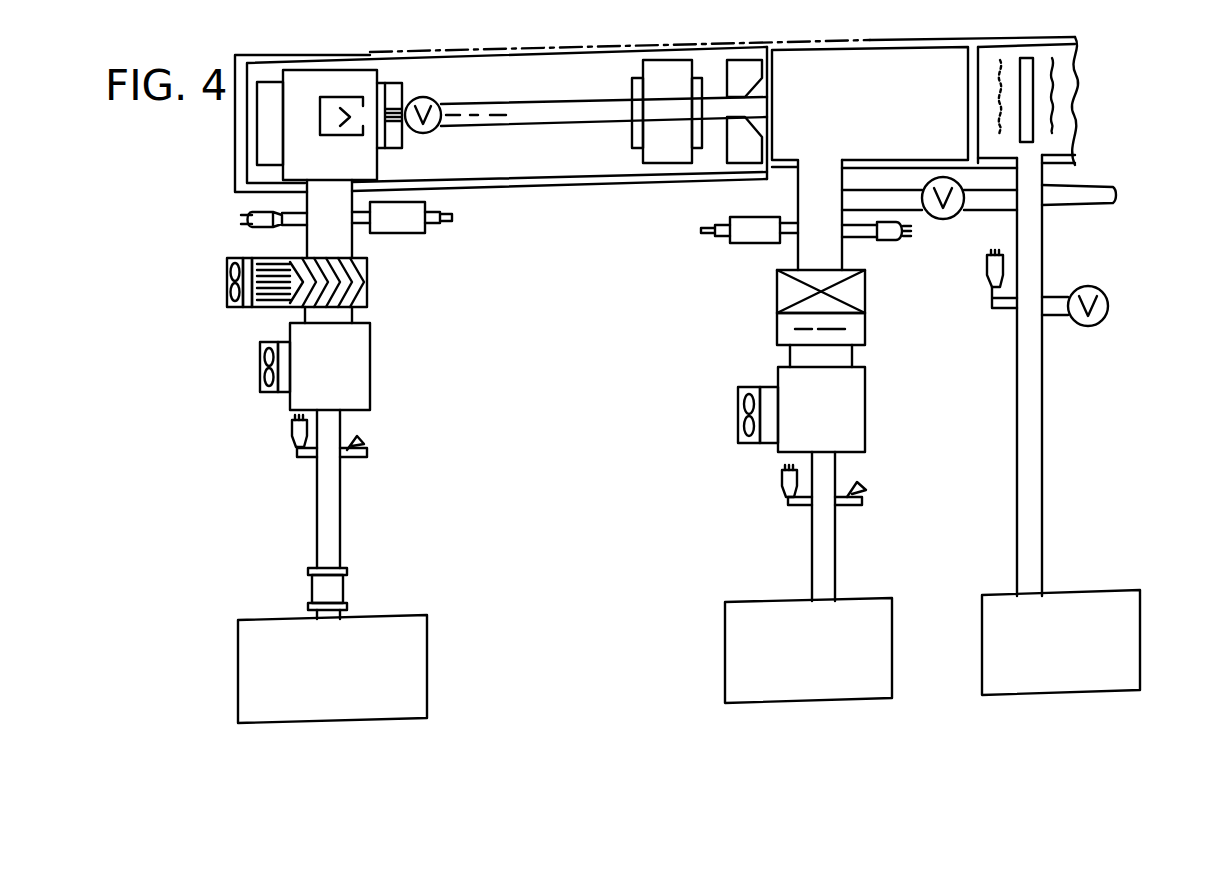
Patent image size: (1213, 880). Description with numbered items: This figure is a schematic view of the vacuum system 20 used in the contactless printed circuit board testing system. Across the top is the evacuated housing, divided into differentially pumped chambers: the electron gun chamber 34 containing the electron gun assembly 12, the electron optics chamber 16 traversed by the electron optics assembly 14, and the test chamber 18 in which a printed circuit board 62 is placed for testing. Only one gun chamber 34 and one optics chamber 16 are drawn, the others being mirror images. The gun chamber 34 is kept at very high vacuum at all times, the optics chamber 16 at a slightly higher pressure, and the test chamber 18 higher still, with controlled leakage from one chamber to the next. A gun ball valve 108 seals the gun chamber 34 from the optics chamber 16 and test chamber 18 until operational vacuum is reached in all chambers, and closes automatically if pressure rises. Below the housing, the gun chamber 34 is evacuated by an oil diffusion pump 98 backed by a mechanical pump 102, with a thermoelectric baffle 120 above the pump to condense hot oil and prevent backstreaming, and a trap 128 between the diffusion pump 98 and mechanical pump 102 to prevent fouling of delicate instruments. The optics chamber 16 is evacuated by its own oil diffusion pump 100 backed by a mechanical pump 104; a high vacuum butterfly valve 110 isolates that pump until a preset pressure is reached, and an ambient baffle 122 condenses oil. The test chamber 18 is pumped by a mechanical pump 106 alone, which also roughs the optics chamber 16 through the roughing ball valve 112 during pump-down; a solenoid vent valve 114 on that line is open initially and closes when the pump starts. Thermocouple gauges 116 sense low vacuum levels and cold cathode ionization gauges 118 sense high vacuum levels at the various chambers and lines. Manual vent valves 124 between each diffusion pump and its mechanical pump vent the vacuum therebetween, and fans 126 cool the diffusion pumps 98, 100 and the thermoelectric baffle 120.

The electron gun assembly 12 is at (297, 117).
The electron optics assembly 14 is at (567, 110).
The electron optics chamber 16 is at (832, 80).
The test chamber 18 is at (1040, 55).
The vacuum system 20 is at (640, 0).
The electron gun chamber 34 is at (308, 82).
The printed circuit board 62 is at (1030, 103).
The oil diffusion pump 98 is at (343, 367).
The oil diffusion pump 100 is at (833, 413).
The mechanical pump 102 is at (366, 700).
The mechanical pump 104 is at (803, 688).
The mechanical pump 106 is at (1060, 675).
The gun ball valve 108 is at (423, 98).
The high vacuum butterfly valve 110 is at (787, 287).
The roughing ball valve 112 is at (942, 220).
The solenoid vent valve 114 is at (1110, 302).
The thermocouple gauge 116 is at (243, 213).
The cold cathode ionization gauge 118 is at (410, 220).
The thermoelectric baffle 120 is at (350, 278).
The ambient baffle 122 is at (775, 333).
The manual vent valve 124 is at (367, 448).
The fan 126 is at (223, 290).
The trap 128 is at (337, 587).